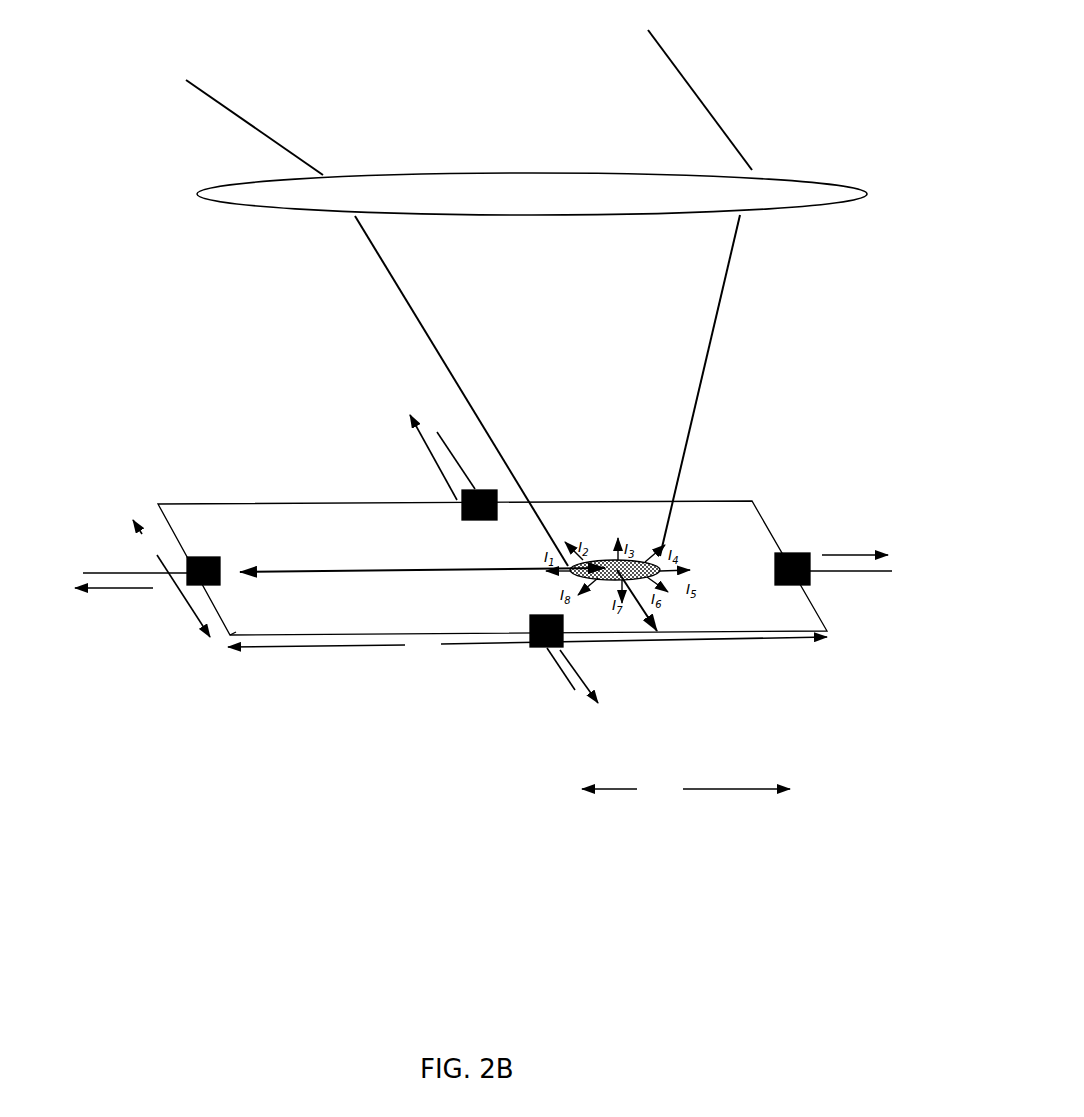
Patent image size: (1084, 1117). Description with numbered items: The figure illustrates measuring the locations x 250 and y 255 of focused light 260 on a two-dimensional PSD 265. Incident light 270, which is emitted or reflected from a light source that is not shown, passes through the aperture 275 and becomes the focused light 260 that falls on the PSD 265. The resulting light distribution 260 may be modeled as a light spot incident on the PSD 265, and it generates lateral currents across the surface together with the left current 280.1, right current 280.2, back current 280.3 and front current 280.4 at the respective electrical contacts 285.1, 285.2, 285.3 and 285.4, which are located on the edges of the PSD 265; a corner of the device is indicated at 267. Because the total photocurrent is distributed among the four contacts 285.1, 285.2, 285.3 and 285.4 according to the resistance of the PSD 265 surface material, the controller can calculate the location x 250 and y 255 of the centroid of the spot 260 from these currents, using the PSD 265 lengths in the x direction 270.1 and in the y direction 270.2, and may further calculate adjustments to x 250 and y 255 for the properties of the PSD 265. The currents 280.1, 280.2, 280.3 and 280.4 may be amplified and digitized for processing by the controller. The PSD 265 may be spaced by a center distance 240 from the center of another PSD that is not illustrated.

The distance S_D 240 is at (665, 808).
The location x 250 is at (393, 544).
The location y 255 is at (682, 613).
The focused light 260 is at (620, 548).
The two-dimensional PSD 265 is at (310, 502).
The corner of detector 267 is at (233, 637).
The incident light 270 is at (469, 102).
The length D_x 270.1 is at (427, 667).
The length D_y 270.2 is at (131, 538).
The aperture 275 is at (810, 190).
The current I_L 280.1 is at (111, 608).
The current I_R 280.2 is at (856, 534).
The current I_B 280.3 is at (418, 482).
The current I_F 280.4 is at (547, 647).
The electrical contact 285.1 is at (188, 578).
The electrical contact 285.2 is at (792, 553).
The electrical contact 285.3 is at (482, 490).
The electrical contact 285.4 is at (618, 662).